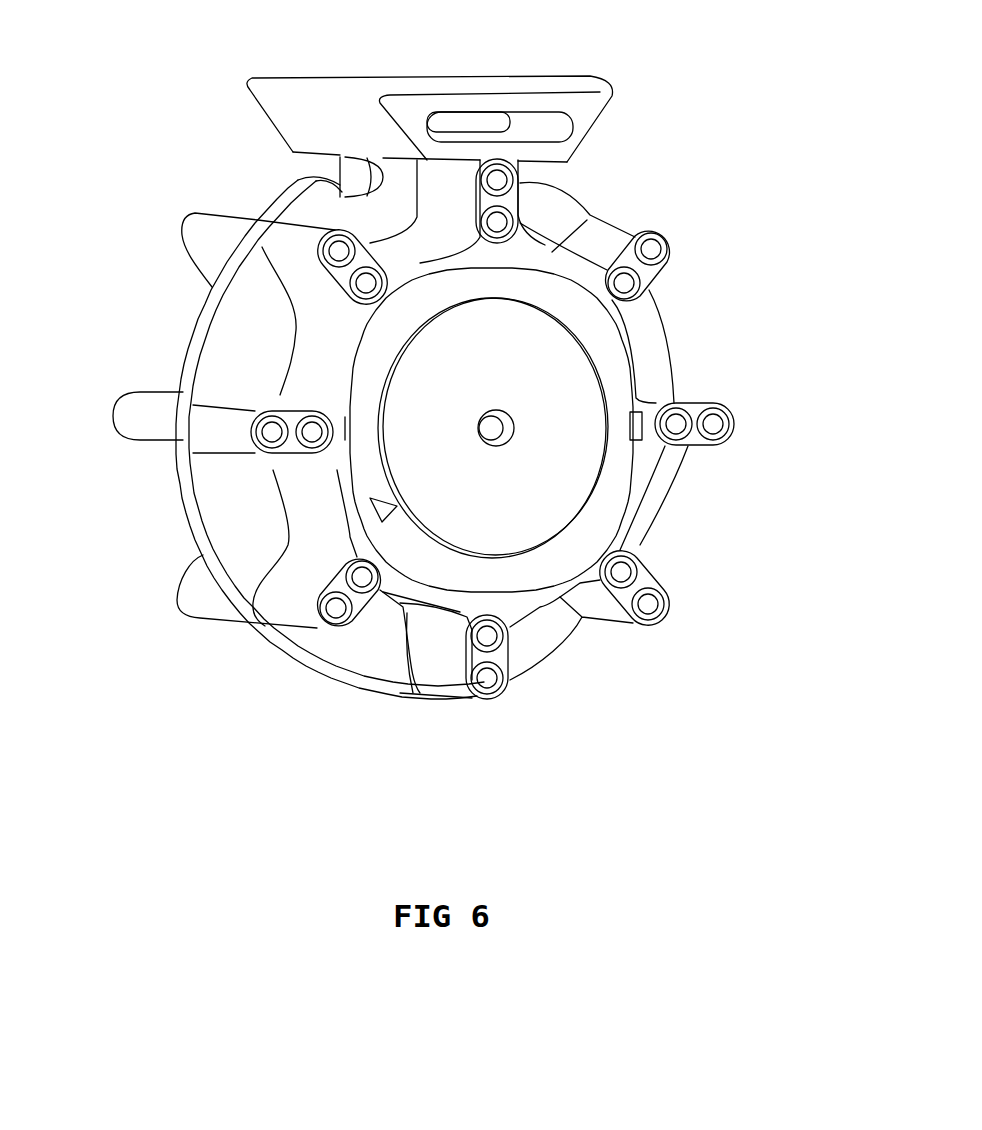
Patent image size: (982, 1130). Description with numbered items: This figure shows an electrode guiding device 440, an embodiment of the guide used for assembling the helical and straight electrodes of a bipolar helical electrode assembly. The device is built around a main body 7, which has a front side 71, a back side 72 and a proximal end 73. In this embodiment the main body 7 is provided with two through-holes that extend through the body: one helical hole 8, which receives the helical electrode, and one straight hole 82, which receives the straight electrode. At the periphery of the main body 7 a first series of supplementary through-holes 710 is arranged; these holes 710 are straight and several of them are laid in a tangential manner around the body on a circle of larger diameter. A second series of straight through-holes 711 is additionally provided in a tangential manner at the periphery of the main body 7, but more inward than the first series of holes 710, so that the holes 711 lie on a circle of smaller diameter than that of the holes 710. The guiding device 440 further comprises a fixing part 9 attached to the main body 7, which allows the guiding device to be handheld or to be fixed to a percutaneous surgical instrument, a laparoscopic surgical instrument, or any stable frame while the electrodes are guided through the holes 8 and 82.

The electrode guiding device 440 is at (108, 115).
The fixing part 9 is at (533, 93).
The back side 72 is at (645, 151).
The front side 71 is at (800, 320).
The helical through-hole 8 is at (445, 276).
The straight through-hole 82 is at (478, 424).
The proximal end 73 is at (530, 470).
The main body 7 is at (570, 632).
The supplementary through-hole 710 is at (333, 612).
The second series of straight through-holes 711 is at (487, 637).